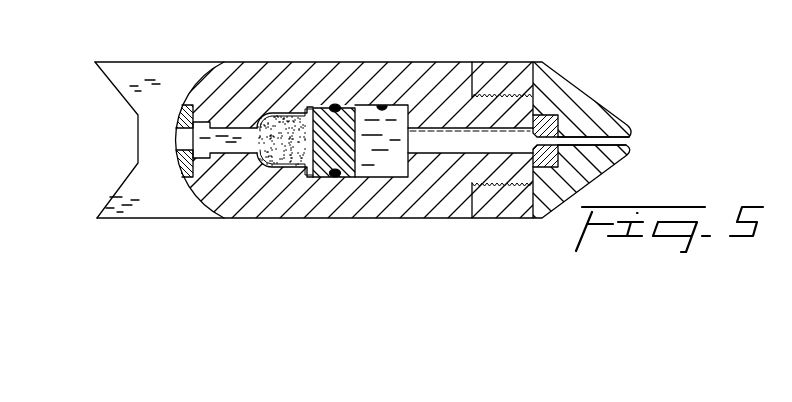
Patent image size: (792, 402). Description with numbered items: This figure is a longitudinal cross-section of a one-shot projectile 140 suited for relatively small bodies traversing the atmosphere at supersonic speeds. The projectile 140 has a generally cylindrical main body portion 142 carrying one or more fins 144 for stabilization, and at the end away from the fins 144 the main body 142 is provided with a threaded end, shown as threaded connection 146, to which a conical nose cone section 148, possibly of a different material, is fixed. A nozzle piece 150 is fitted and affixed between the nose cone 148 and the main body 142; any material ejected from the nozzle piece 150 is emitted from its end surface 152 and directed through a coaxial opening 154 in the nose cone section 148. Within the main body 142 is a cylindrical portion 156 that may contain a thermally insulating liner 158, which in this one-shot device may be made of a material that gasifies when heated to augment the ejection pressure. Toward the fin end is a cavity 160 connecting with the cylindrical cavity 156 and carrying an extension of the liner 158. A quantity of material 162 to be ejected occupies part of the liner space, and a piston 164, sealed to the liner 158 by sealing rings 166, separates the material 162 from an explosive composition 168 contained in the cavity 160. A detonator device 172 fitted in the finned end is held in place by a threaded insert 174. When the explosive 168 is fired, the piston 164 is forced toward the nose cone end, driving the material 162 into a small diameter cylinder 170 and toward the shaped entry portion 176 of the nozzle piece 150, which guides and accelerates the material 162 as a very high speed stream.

The projectile 140 is at (586, 53).
The main body portion 142 is at (352, 68).
The fins 144 is at (133, 68).
The threaded connection 146 is at (498, 99).
The nose cone section 148 is at (603, 112).
The nozzle piece 150 is at (547, 161).
The end surface 152 is at (629, 134).
The coaxial opening 154 is at (624, 144).
The cylindrical portion 156 is at (384, 172).
The thermally insulating liner 158 is at (383, 107).
The cavity 160 is at (270, 166).
The material to be ejected 162 is at (400, 162).
The piston 164 is at (348, 166).
The sealing rings 166 is at (333, 106).
The explosive composition 168 is at (273, 125).
The small diameter cylinder 170 is at (493, 138).
The detonator device 172 is at (240, 140).
The threaded insert 174 is at (176, 123).
The shaped entry portion 176 is at (533, 122).